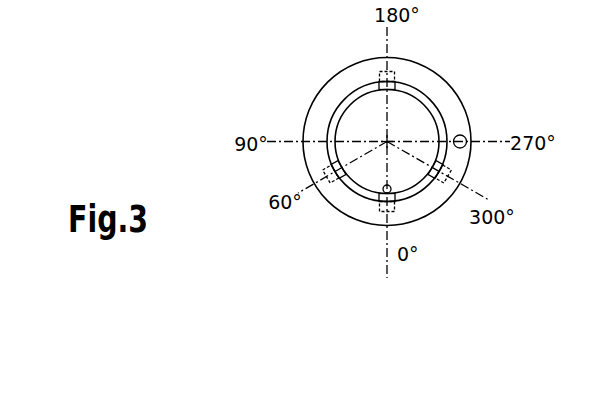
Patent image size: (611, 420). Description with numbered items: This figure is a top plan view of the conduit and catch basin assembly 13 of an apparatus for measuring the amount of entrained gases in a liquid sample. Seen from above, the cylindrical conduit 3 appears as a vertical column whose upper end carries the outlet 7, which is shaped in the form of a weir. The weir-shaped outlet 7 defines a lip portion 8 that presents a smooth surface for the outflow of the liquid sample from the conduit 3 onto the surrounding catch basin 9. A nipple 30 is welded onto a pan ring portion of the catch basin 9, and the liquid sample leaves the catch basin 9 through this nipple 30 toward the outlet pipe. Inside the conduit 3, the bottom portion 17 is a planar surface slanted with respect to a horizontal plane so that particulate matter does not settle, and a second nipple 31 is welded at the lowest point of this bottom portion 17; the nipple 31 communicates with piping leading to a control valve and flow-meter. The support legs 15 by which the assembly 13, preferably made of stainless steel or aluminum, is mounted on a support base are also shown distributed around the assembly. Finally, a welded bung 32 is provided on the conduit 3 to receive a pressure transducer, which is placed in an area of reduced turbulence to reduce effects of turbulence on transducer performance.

The cylindrical conduit 3 is at (408, 112).
The outlet 7 is at (437, 103).
The lip portion 8 is at (329, 125).
The catch basin 9 is at (335, 93).
The conduit and catch basin assembly 13 is at (238, 231).
The support legs 15 is at (378, 83).
The bottom portion 17 is at (362, 142).
The nipple 30 is at (466, 138).
The nipple 31 is at (395, 186).
The welded bung 32 is at (375, 209).